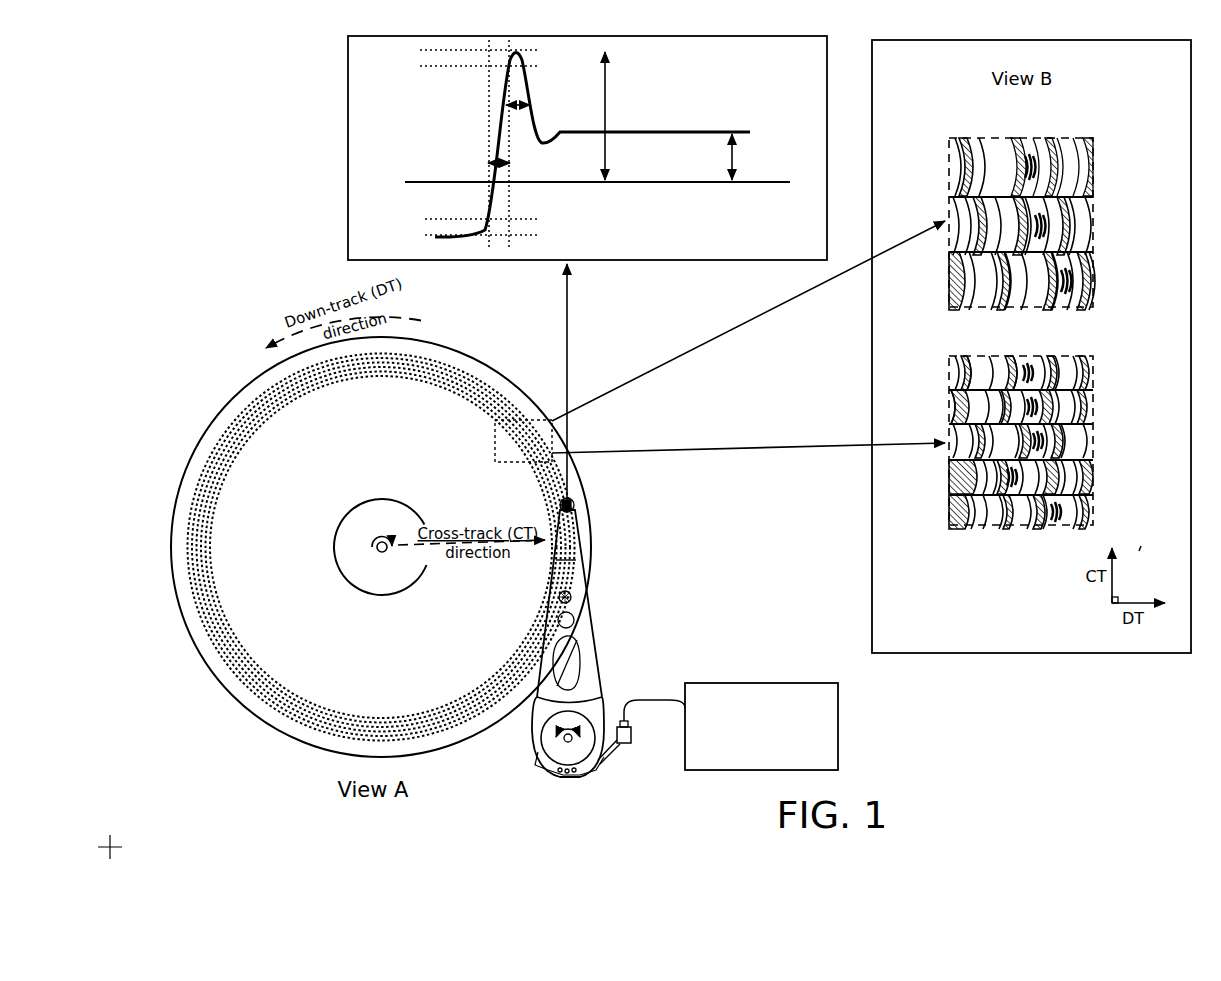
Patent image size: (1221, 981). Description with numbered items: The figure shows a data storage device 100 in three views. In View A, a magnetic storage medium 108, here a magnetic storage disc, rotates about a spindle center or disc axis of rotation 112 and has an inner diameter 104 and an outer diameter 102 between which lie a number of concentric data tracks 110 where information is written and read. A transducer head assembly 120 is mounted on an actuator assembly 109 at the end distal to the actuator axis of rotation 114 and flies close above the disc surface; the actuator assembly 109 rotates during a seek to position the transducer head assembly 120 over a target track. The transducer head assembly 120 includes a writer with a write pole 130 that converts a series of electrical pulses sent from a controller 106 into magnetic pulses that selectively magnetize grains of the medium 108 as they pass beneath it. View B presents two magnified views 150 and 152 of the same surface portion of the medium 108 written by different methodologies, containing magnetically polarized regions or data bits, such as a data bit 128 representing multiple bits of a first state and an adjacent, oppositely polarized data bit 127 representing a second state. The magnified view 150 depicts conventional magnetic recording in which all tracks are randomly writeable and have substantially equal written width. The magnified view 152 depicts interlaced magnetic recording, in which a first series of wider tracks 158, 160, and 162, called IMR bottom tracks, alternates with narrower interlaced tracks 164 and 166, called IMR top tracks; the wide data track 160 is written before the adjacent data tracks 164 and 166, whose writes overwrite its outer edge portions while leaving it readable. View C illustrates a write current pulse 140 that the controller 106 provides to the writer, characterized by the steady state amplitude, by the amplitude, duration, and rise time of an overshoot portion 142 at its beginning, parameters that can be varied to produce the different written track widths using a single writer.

The data storage device 100 is at (292, 138).
The outer diameter 102 is at (237, 395).
The inner diameter 104 is at (335, 554).
The controller 106 is at (761, 726).
The magnetic storage medium 108 is at (257, 718).
The actuator assembly 109 is at (584, 636).
The concentric data tracks 110 is at (220, 665).
The disc axis of rotation 112 is at (378, 543).
The actuator axis of rotation 114 is at (565, 738).
The transducer head assembly 120 is at (575, 504).
The data bit 127 is at (958, 145).
The data bit 128 is at (980, 139).
The write pole 130 is at (608, 760).
The write current pulse 140 is at (587, 148).
The overshoot portion 142 is at (507, 80).
The magnified view 150 is at (946, 177).
The magnified view 152 is at (1040, 354).
The data track 158 is at (1098, 370).
The data track 160 is at (1098, 443).
The data track 162 is at (1098, 510).
The data track 164 is at (1098, 407).
The data track 166 is at (1098, 476).